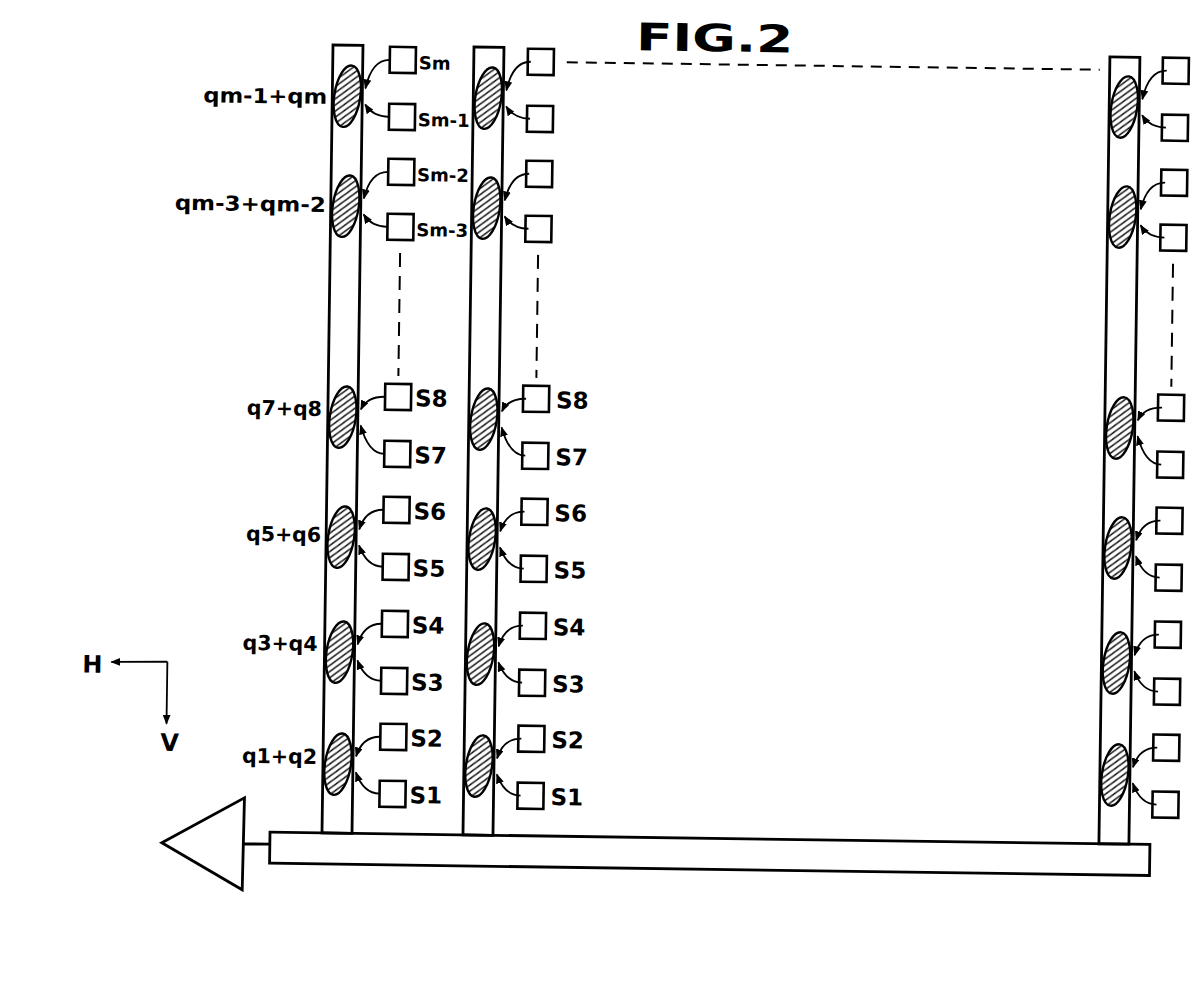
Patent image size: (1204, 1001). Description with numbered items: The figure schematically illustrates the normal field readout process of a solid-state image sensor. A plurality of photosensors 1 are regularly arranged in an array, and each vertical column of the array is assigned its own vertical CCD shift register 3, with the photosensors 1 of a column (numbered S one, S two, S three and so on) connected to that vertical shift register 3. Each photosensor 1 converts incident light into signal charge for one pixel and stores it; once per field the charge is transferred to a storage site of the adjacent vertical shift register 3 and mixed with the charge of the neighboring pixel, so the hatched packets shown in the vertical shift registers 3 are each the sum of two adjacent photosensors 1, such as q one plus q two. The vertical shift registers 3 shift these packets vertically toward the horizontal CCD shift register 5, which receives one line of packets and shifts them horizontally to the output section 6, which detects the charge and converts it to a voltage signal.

The photosensor 1 is at (556, 59).
The vertical CCD shift register 3 is at (336, 308).
The horizontal CCD shift register 5 is at (823, 841).
The output section 6 is at (212, 826).